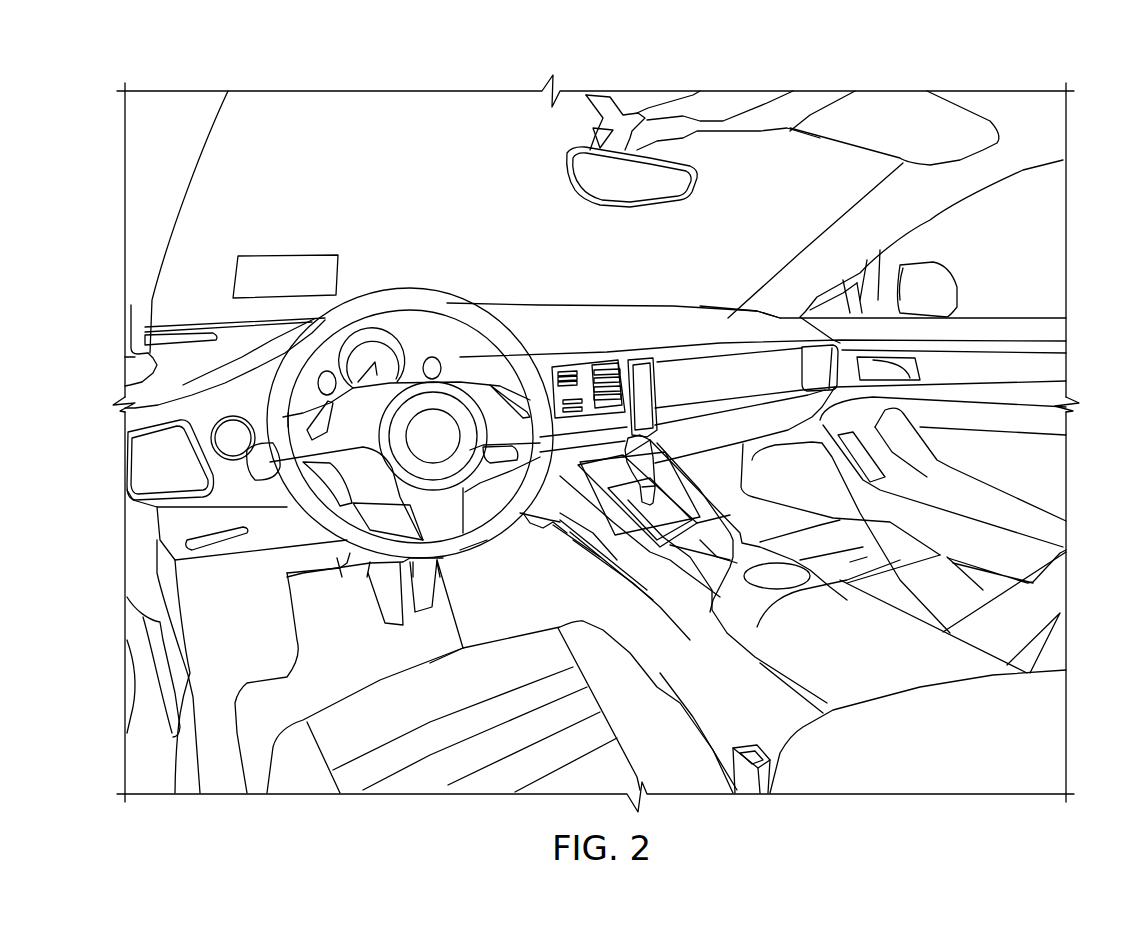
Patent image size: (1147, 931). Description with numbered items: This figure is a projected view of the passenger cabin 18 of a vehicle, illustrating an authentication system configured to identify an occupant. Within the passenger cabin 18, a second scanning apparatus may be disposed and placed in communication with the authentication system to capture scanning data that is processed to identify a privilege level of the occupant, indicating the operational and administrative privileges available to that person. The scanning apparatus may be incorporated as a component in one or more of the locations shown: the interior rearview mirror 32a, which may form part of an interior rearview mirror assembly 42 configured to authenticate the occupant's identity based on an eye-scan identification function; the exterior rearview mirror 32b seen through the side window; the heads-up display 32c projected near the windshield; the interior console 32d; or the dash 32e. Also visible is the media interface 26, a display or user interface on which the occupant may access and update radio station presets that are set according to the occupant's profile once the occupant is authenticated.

The passenger cabin 18 is at (338, 176).
The interior rearview mirror 32a is at (655, 172).
The interior rearview mirror assembly 42 is at (632, 177).
The heads-up display 32c is at (236, 262).
The interior console 32d is at (603, 473).
The media interface 26 is at (610, 367).
The dash 32e is at (712, 323).
The exterior rearview mirror 32b is at (928, 287).